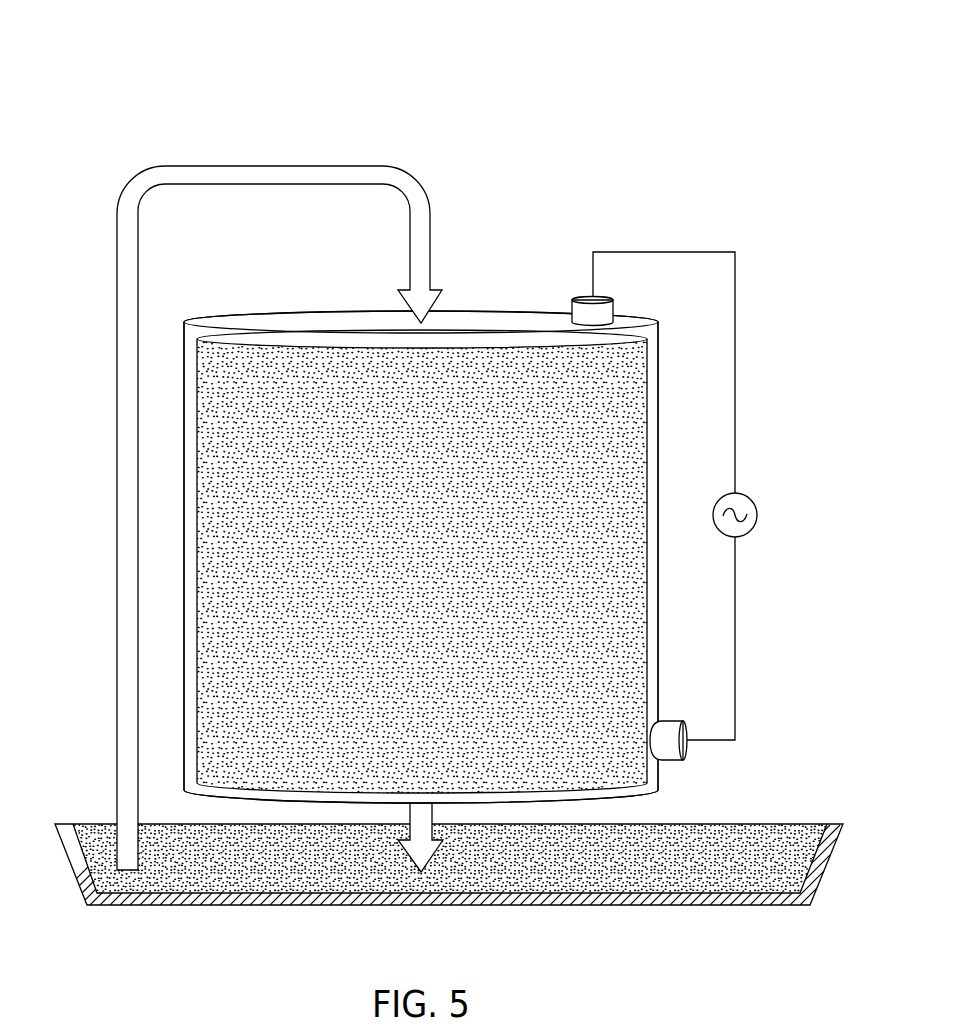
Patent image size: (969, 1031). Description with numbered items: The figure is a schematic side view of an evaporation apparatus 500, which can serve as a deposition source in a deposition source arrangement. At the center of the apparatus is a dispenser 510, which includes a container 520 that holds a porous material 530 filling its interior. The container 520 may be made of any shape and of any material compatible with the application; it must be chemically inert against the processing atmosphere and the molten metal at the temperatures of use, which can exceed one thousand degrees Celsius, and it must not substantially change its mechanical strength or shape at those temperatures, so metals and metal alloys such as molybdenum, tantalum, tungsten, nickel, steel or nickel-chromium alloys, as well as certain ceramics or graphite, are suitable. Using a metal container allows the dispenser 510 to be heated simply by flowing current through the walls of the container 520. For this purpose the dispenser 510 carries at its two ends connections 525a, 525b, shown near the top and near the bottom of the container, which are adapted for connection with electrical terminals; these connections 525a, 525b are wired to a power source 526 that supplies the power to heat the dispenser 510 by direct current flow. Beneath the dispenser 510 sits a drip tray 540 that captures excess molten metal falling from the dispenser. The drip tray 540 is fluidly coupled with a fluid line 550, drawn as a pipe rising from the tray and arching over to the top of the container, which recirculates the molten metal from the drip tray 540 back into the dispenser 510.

The evaporation apparatus 500 is at (135, 100).
The dispenser 510 is at (223, 518).
The container 520 is at (184, 533).
The connection 525a is at (571, 304).
The connection 525b is at (672, 762).
The power source 526 is at (753, 498).
The porous material 530 is at (453, 572).
The drip tray 540 is at (835, 848).
The fluid line 550 is at (117, 447).